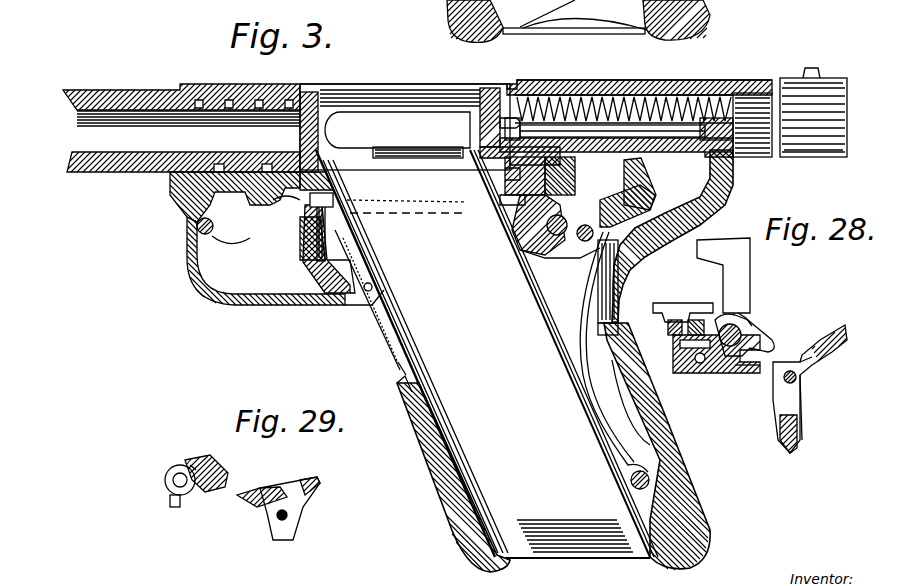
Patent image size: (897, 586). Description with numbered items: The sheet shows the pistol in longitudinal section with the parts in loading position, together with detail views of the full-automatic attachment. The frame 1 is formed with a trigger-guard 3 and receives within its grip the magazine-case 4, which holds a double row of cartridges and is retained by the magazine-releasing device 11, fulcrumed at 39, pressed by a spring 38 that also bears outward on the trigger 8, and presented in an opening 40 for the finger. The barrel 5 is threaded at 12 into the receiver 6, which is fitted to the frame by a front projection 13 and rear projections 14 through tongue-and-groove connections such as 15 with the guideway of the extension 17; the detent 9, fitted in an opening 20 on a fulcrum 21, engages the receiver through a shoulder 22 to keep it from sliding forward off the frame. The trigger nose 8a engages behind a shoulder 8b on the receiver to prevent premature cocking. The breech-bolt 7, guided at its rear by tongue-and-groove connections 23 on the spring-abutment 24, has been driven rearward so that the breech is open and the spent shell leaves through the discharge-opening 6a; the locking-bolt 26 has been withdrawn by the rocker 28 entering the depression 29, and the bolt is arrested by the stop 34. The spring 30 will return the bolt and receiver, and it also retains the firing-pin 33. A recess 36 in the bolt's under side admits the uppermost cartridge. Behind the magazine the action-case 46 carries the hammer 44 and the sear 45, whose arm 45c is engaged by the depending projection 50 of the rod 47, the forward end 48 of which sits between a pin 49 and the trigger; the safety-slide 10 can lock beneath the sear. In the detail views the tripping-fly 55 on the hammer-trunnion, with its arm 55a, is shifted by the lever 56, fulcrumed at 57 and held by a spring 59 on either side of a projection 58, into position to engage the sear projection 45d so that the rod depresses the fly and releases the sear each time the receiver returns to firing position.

In FIG. 3, the frame 1 is at (716, 211).
In FIG. 3, the trigger-guard 3 is at (210, 300).
In FIG. 3, the magazine-case 4 is at (487, 354).
In FIG. 3, the barrel 5 is at (92, 133).
In FIG. 3, the receiver 6 is at (243, 89).
In FIG. 3, the discharge-opening 6a is at (395, 132).
In FIG. 3, the breech-bolt 7 is at (678, 94).
In FIG. 3, the trigger 8 is at (325, 268).
In FIG. 3, the nose 8a is at (279, 211).
In FIG. 3, the shoulder 8b is at (300, 232).
In FIG. 3, the detent 9 is at (215, 218).
In FIG. 3, the safety-slide 10 is at (585, 291).
In FIG. 3, the magazine-releasing device 11 is at (398, 382).
In FIG. 3, the thread 12 is at (285, 96).
In FIG. 3, the front projection 13 is at (190, 222).
In FIG. 3, the rear projections 14 is at (500, 166).
In FIG. 3, the tongue-and-groove connection 15 is at (180, 195).
In FIG. 3, the extension 17 is at (185, 208).
In FIG. 3, the opening 20 is at (250, 240).
In FIG. 3, the fulcrum 21 is at (222, 170).
In FIG. 3, the shoulder 22 is at (272, 170).
In FIG. 3, the tongue-and-groove connections 23 is at (796, 145).
In FIG. 3, the spring-abutment 24 is at (772, 150).
In FIG. 3, the locking-bolt 26 is at (576, 175).
In FIG. 3, the rocker 28 is at (515, 183).
In FIG. 3, the depression 29 is at (500, 205).
In FIG. 3, the spring 30 is at (617, 94).
In FIG. 3, the firing-pin 33 is at (552, 130).
In FIG. 3, the stop 34 is at (733, 175).
In FIG. 3, the recess 36 is at (627, 206).
In FIG. 3, the spring 38 is at (348, 302).
In FIG. 3, the fulcrum 39 is at (372, 287).
In FIG. 3, the opening 40 is at (388, 363).
In FIG. 3, the hammer 44 is at (645, 190).
In FIG. 28, the hammer 44 is at (745, 277).
In FIG. 3, the sear 45 is at (545, 260).
In FIG. 28, the sear 45 is at (713, 374).
In FIG. 28, the arm 45c is at (680, 366).
In FIG. 28, the projection 45d is at (814, 358).
In FIG. 3, the action-case 46 is at (535, 233).
In FIG. 28, the action-case 46 is at (735, 376).
In FIG. 3, the rod 47 is at (355, 205).
In FIG. 28, the rod 47 is at (688, 304).
In FIG. 3, the forward end 48 is at (352, 220).
In FIG. 3, the pin 49 is at (308, 242).
In FIG. 28, the depending projection 50 is at (680, 345).
In FIG. 28, the tripping-fly 55 is at (748, 320).
In FIG. 29, the tripping-fly 55 is at (195, 495).
In FIG. 28, the arm 55a is at (745, 312).
In FIG. 29, the arm 55a is at (180, 468).
In FIG. 3, the lever 56 is at (619, 313).
In FIG. 28, the lever 56 is at (797, 358).
In FIG. 29, the lever 56 is at (312, 500).
In FIG. 3, the fulcrum 57 is at (619, 292).
In FIG. 28, the fulcrum 57 is at (806, 378).
In FIG. 28, the projection 58 is at (782, 425).
In FIG. 3, the spring 59 is at (590, 312).
In FIG. 28, the spring 59 is at (782, 392).